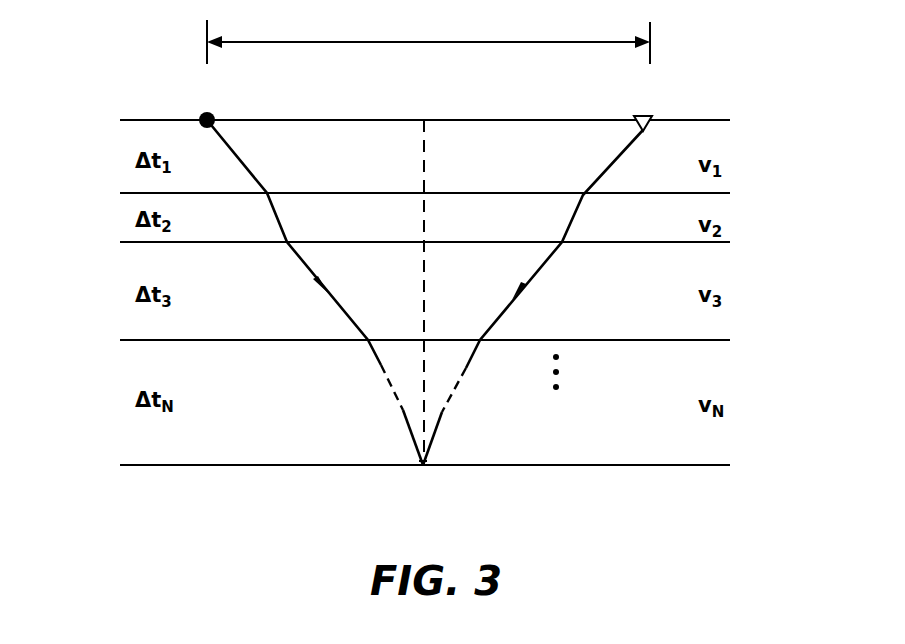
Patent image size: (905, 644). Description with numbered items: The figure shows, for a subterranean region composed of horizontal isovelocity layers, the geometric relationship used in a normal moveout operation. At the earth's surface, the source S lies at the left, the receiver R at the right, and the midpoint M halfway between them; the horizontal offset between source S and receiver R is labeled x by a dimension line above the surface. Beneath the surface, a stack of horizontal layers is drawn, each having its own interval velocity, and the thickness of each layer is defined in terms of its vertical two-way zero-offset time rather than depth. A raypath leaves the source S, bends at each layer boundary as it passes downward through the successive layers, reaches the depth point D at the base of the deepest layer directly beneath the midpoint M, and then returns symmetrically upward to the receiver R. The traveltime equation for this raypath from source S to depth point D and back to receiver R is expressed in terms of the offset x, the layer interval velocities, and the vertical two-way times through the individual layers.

The source-receiver offset x is at (478, 42).
The source S is at (216, 118).
The midpoint M is at (426, 127).
The receiver R is at (647, 110).
The depth point D is at (424, 484).